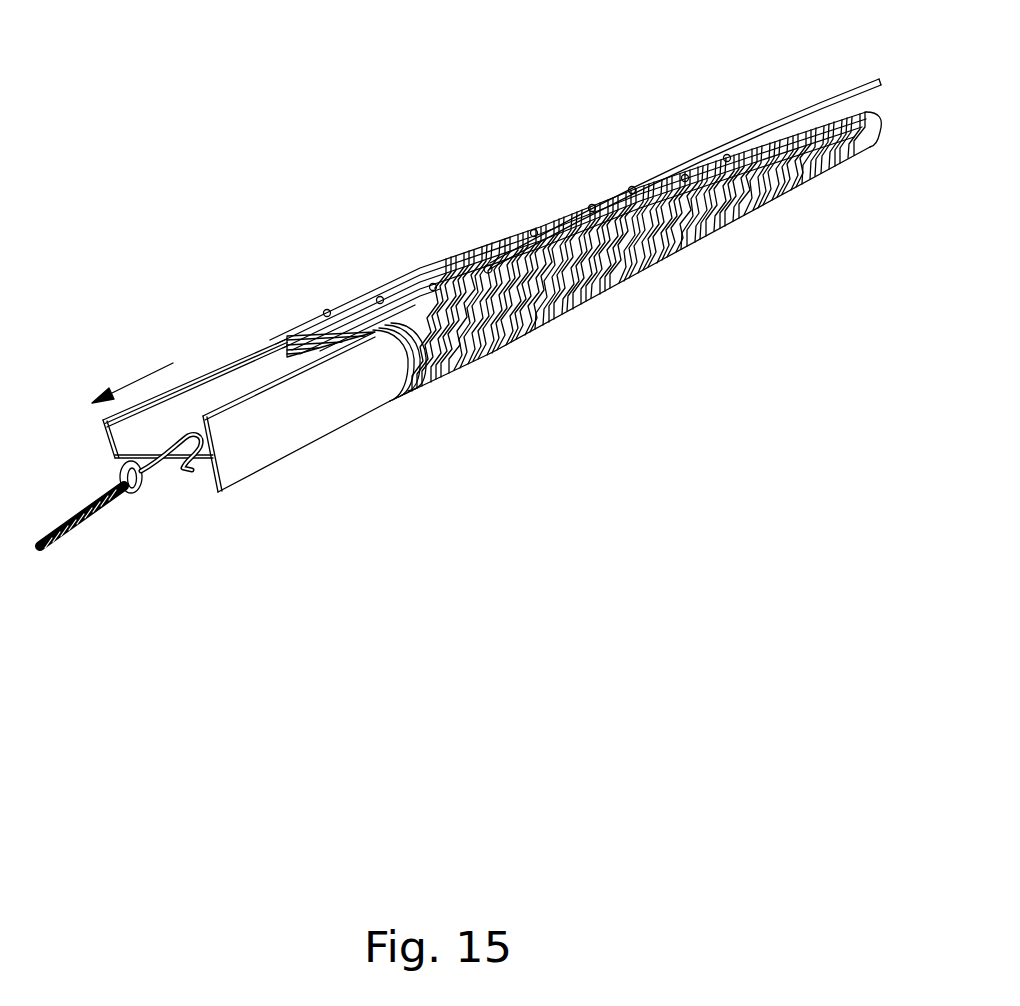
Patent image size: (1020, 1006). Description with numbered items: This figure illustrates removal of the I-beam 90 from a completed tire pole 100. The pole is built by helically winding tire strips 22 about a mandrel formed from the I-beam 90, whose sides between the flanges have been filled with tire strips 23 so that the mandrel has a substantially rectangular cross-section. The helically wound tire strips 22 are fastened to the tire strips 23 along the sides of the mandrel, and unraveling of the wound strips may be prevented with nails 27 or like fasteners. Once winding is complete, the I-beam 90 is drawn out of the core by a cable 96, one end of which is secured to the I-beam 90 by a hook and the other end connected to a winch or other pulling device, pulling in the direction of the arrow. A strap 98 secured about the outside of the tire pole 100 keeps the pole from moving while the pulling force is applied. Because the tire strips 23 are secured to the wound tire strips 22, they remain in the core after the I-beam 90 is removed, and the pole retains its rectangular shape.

The tire pole 100 is at (401, 226).
The tire strips 22 is at (467, 357).
The tire strips 23 is at (277, 337).
The nails 27 is at (630, 188).
The I-beam 90 is at (280, 423).
The cable 96 is at (118, 502).
The strap 98 is at (852, 98).